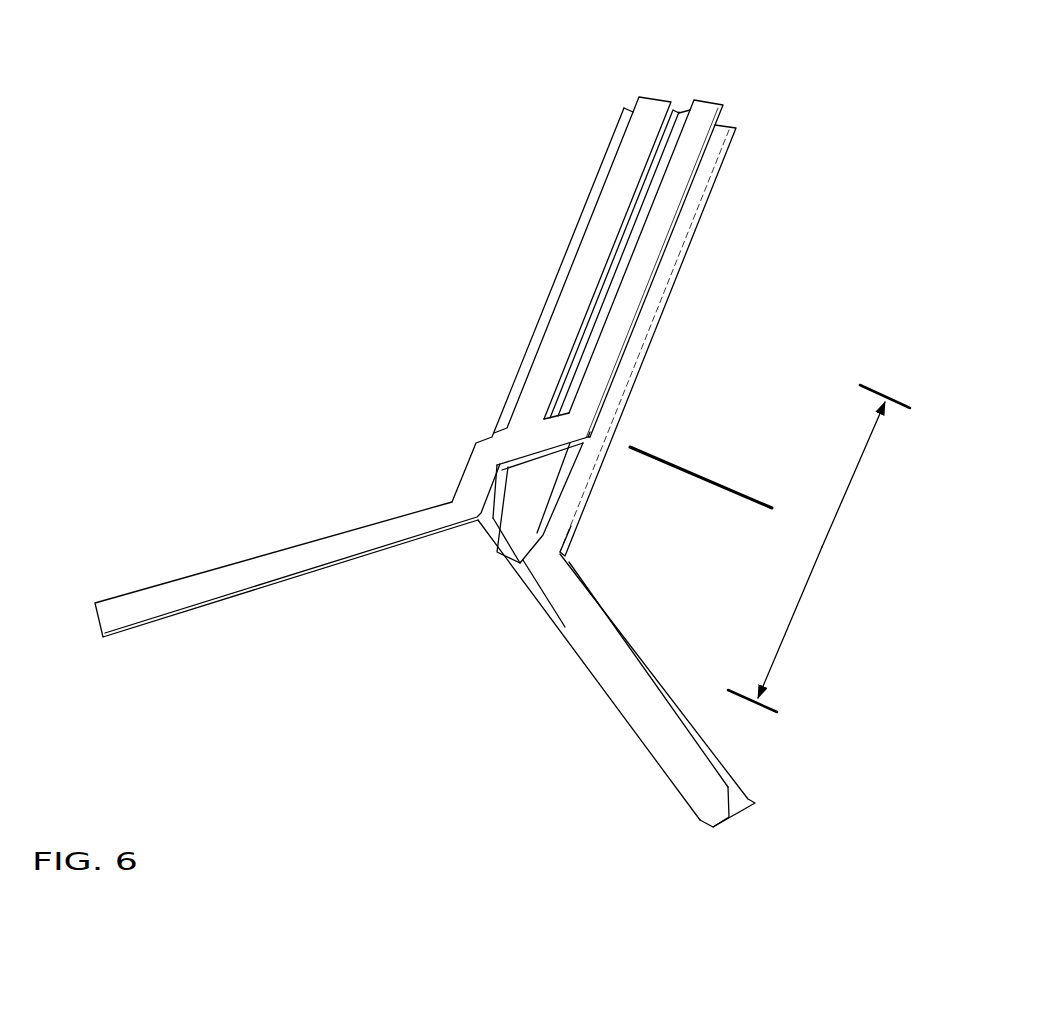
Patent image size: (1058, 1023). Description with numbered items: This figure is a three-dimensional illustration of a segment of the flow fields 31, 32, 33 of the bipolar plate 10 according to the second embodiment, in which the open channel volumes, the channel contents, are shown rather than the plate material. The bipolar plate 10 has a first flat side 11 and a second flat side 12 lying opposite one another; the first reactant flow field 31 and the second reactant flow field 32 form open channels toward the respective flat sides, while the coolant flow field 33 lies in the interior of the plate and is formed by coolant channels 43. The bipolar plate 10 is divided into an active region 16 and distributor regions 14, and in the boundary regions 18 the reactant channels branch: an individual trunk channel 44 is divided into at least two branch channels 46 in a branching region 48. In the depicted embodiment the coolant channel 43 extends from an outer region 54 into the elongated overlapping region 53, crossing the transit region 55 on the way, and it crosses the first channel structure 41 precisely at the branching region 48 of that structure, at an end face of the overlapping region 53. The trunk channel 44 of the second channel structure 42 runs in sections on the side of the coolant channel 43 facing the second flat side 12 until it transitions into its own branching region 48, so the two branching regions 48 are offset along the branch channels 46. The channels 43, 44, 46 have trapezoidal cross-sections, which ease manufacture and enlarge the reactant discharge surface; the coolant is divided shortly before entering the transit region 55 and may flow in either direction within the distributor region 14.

The bipolar plate 10 is at (346, 136).
The first flat side 11 is at (655, 340).
The second flat side 12 is at (588, 271).
The distributor region 14 is at (753, 513).
The active region 16 is at (775, 465).
The boundary region 18 is at (828, 528).
The first reactant flow field 31 is at (657, 690).
The second reactant flow field 32 is at (286, 561).
The coolant flow field 33 is at (547, 634).
The first channel structure 41 is at (640, 647).
The second channel structure 42 is at (296, 552).
The coolant channel 43 is at (637, 720).
The trunk channel 44 is at (427, 527).
The branch channels 46 is at (708, 108).
The branching region 48 is at (572, 425).
The overlapping region 53 is at (637, 240).
The outer region 54 is at (390, 402).
The transit region 55 is at (552, 500).